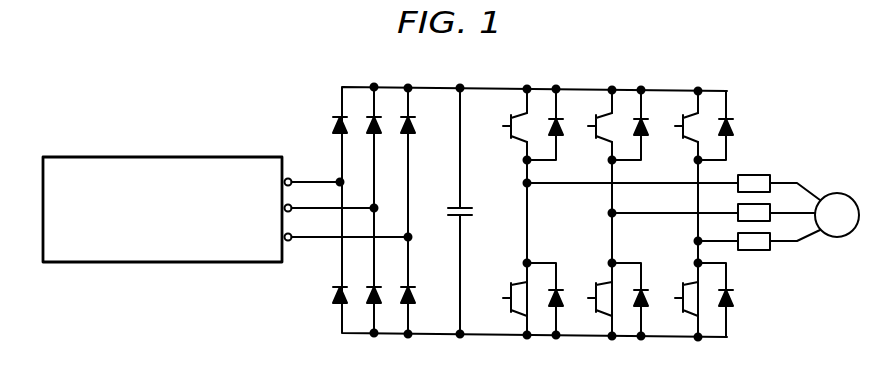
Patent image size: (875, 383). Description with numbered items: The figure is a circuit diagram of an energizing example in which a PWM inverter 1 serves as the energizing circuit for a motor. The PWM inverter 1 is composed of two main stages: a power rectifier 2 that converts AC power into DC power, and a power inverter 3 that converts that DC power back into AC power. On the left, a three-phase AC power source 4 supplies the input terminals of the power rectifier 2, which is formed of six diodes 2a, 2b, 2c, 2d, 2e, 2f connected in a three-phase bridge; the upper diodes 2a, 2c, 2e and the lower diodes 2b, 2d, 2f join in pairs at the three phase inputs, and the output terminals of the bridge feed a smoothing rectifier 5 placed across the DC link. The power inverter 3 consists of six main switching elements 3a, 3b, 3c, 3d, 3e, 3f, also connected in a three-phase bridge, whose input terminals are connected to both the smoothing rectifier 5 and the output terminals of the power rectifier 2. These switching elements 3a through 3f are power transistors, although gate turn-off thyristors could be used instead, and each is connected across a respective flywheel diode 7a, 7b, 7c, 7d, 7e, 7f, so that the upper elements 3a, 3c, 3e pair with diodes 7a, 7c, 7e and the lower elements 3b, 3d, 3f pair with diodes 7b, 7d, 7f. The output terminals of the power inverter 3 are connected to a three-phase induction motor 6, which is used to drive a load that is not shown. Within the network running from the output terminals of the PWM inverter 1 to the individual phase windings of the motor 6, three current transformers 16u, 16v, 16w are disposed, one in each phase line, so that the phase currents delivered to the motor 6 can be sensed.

The PWM inverter 1 is at (497, 88).
The power rectifier 2 is at (386, 194).
The diode 2a is at (347, 130).
The diode 2b is at (348, 290).
The diode 2c is at (381, 130).
The diode 2d is at (382, 290).
The diode 2e is at (415, 130).
The diode 2f is at (416, 290).
The power inverter 3 is at (673, 89).
The main switching element 3a is at (503, 126).
The main switching element 3b is at (498, 295).
The main switching element 3c is at (588, 126).
The main switching element 3d is at (583, 295).
The main switching element 3e is at (675, 126).
The main switching element 3f is at (671, 295).
The three-phase AC power source 4 is at (267, 157).
The smoothing rectifier 5 is at (462, 206).
The three-phase induction motor 6 is at (847, 197).
The flywheel diode 7a is at (561, 130).
The flywheel diode 7b is at (563, 301).
The flywheel diode 7c is at (647, 130).
The flywheel diode 7d is at (646, 301).
The flywheel diode 7e is at (732, 132).
The flywheel diode 7f is at (730, 301).
The current transformer 16u is at (762, 177).
The current transformer 16v is at (738, 211).
The current transformer 16w is at (762, 252).